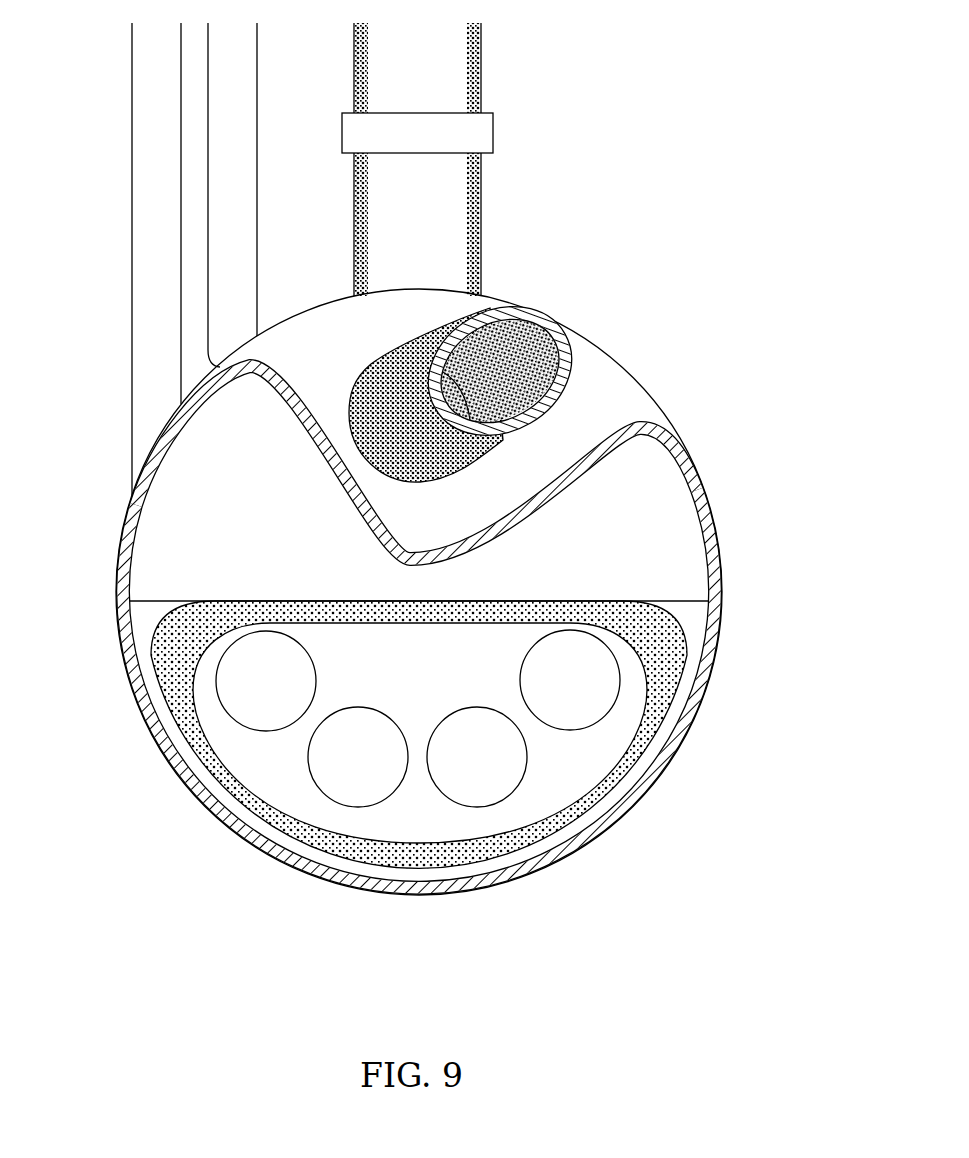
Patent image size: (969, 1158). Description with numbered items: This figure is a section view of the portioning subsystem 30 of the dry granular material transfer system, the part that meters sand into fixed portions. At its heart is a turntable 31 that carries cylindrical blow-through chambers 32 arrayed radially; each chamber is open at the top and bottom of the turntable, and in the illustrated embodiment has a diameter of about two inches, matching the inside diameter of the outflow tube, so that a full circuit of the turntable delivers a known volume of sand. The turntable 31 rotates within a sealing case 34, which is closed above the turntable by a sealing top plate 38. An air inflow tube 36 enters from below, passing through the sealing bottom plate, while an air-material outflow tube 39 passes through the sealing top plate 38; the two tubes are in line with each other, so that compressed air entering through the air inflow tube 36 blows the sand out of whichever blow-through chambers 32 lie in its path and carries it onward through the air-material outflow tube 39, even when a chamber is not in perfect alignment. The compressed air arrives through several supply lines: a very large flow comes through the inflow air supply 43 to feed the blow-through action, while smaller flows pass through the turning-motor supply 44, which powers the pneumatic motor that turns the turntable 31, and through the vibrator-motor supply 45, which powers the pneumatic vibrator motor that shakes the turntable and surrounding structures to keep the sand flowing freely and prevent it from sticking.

The portioning subsystem 30 is at (91, 200).
The turntable 31 is at (389, 671).
The blow-through chambers 32 is at (453, 722).
The sealing case 34 is at (128, 557).
The air inflow tube 36 is at (476, 221).
The sealing top plate 38 is at (326, 318).
The air-material outflow tube 39 is at (542, 314).
The inflow air supply 43 is at (478, 81).
The turning-motor supply 44 is at (253, 201).
The vibrator-motor supply 45 is at (142, 350).